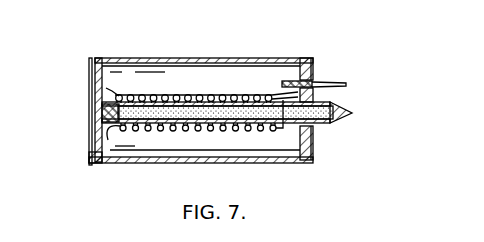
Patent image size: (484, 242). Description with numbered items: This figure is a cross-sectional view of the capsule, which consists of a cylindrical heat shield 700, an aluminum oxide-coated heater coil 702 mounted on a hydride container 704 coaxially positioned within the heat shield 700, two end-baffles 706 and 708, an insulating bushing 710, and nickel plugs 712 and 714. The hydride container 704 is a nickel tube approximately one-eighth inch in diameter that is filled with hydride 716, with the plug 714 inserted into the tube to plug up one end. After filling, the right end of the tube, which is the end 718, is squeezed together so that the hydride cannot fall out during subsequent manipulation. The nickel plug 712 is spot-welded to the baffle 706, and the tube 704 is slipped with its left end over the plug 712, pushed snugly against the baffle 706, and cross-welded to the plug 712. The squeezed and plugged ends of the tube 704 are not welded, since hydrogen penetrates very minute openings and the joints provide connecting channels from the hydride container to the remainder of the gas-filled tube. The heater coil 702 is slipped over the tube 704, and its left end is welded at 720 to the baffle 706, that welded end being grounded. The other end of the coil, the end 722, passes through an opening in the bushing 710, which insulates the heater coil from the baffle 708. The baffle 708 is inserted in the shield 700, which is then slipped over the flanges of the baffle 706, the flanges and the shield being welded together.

The cylindrical heat shield 700 is at (233, 164).
The heater coil 702 is at (253, 93).
The hydride container 704 is at (180, 93).
The end-baffle 706 is at (96, 87).
The end-baffle 708 is at (312, 134).
The insulating bushing 710 is at (314, 78).
The nickel plug 712 is at (102, 114).
The nickel plug 714 is at (142, 94).
The hydride 716 is at (337, 121).
The squeezed end of tube 718 is at (354, 114).
The coil weld 720 is at (110, 138).
The coil end 722 is at (345, 85).